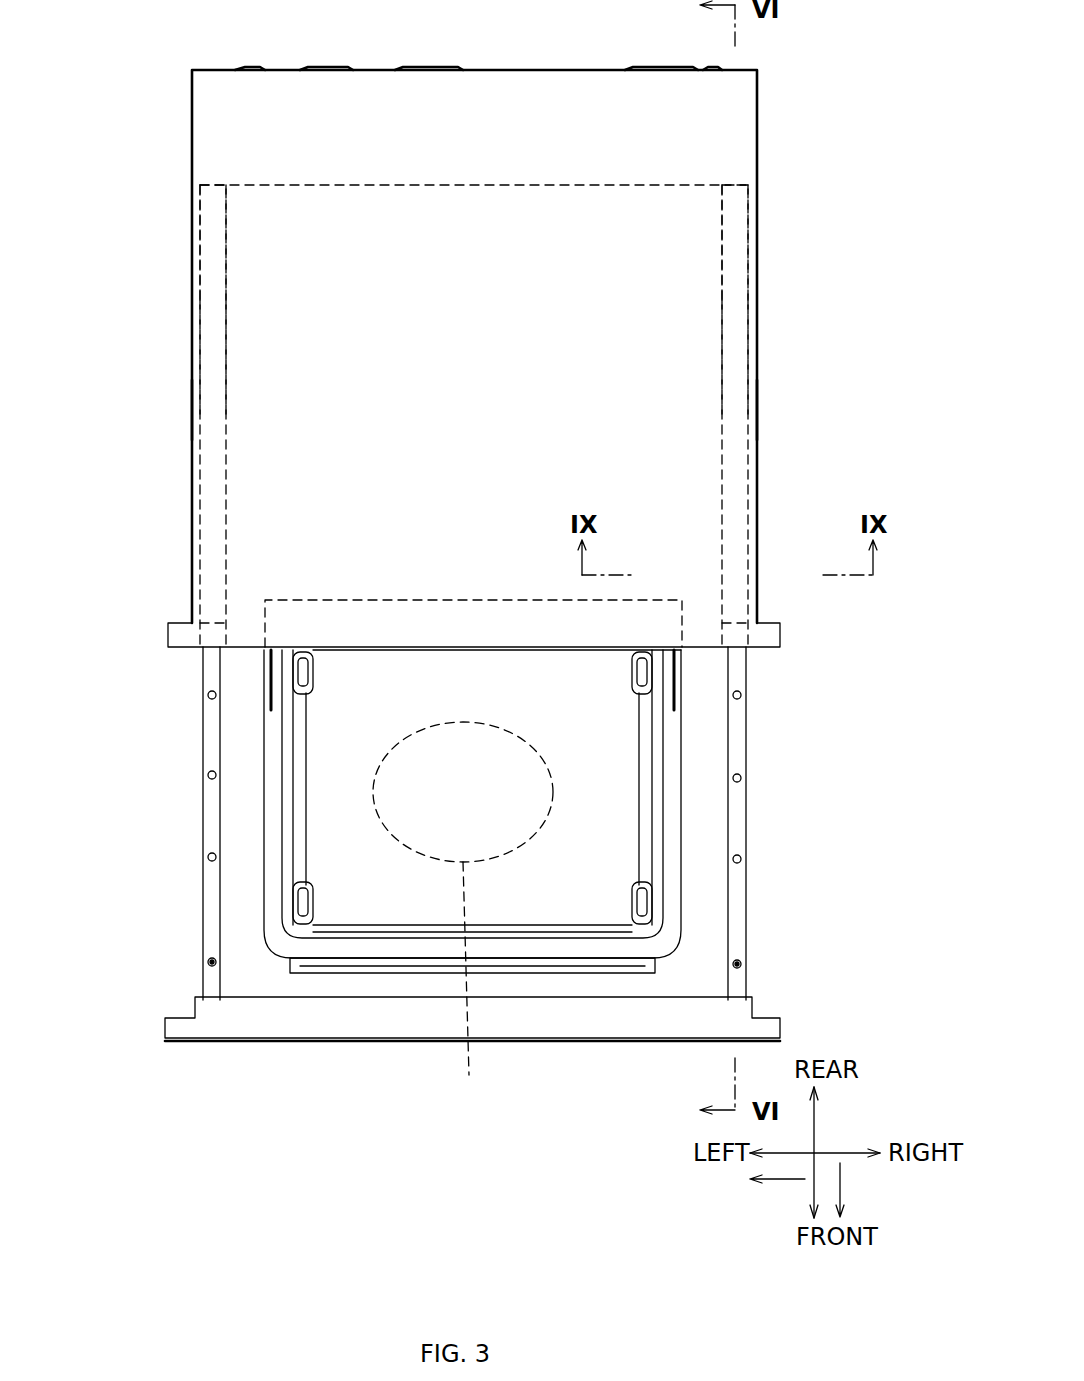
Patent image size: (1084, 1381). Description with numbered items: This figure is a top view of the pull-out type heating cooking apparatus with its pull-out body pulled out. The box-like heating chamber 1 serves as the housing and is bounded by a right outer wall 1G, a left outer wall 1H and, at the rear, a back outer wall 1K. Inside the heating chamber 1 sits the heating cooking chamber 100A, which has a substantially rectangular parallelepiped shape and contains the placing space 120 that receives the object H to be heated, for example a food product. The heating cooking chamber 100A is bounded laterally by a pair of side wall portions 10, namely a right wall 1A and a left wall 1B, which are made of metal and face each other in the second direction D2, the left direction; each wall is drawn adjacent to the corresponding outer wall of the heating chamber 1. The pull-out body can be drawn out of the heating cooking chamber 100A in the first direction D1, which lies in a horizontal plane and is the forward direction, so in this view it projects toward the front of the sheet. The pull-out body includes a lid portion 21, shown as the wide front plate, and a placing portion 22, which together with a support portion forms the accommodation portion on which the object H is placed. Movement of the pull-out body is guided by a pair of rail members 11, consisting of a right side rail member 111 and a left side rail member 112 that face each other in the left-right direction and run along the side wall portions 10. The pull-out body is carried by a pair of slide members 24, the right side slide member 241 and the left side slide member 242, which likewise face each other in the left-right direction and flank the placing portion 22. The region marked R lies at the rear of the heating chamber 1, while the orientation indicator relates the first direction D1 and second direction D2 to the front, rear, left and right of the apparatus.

The heating chamber 1 is at (668, 68).
The back outer wall 1K is at (350, 70).
The recording region R is at (575, 112).
The heating cooking chamber 100A is at (455, 183).
The placing space 120 is at (625, 479).
The pair of rail members 11 is at (142, 215).
The left side rail member 112 is at (212, 185).
The right side rail member 111 is at (735, 185).
The pair of side wall portions 10 is at (163, 354).
The left wall 1B is at (226, 338).
The right wall 1A is at (722, 338).
The left outer wall 1H is at (192, 407).
The right outer wall 1G is at (757, 413).
The pair of slide members 24 is at (146, 823).
The left side slide member 242 is at (212, 772).
The right side slide member 241 is at (738, 772).
The placing portion 22 is at (695, 836).
The lid portion 21 is at (577, 1042).
The object to be heated H is at (463, 916).
The first direction D1 is at (840, 1190).
The second direction D2 is at (776, 1179).